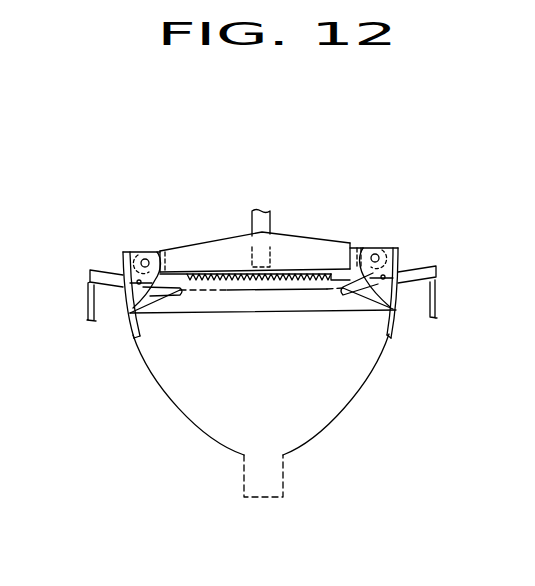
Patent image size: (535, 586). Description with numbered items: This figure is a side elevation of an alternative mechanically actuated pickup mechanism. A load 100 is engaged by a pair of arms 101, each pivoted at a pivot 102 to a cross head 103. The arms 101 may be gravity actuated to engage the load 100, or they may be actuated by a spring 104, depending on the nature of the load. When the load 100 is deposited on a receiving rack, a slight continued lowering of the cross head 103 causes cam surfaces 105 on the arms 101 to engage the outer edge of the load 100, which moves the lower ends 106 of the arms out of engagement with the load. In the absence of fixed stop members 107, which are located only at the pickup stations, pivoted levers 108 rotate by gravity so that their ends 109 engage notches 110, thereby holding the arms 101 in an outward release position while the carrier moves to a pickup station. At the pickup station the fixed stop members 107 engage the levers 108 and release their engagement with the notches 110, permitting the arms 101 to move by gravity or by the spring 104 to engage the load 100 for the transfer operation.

The load 100 is at (208, 412).
The arms 101 is at (130, 335).
The pivot 102 is at (146, 258).
The cross head 103 is at (293, 245).
The spring 104 is at (282, 283).
The cam surfaces 105 is at (140, 298).
The lower ends 106 is at (394, 336).
The fixed stop members 107 is at (88, 308).
The pivoted levers 108 is at (110, 276).
The ends 109 is at (184, 290).
The notches 110 is at (175, 268).